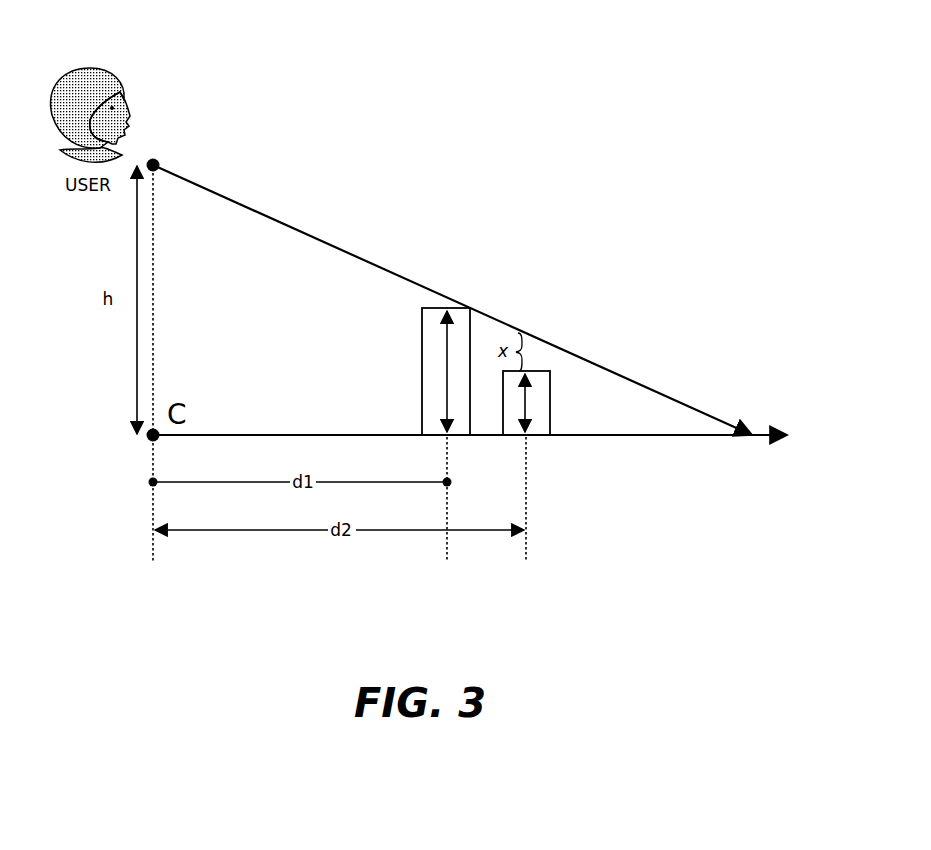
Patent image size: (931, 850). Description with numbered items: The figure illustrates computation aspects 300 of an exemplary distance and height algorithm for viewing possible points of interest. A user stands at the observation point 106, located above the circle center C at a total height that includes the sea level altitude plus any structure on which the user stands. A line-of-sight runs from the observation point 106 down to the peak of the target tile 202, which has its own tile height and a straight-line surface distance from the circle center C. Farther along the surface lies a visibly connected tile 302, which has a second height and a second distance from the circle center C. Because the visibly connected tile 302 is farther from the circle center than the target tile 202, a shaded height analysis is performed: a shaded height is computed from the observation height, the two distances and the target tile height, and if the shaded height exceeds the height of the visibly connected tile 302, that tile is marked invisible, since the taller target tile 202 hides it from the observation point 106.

The observation point 106 is at (160, 160).
The target tile 202 is at (422, 372).
The visibly connected tile 302 is at (550, 397).
The computation aspects 300 is at (712, 46).